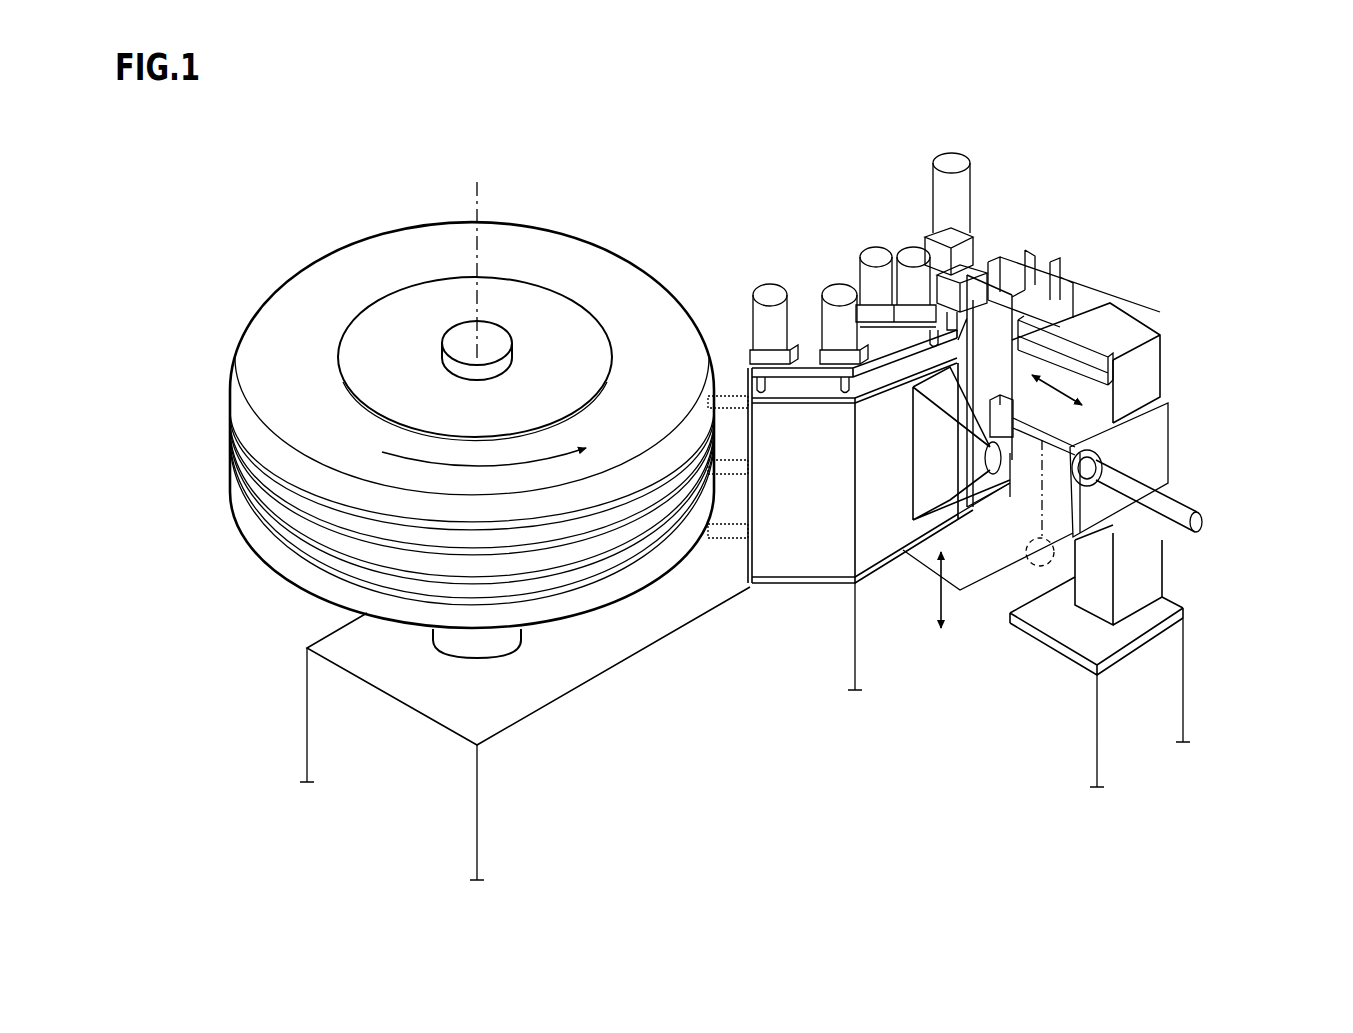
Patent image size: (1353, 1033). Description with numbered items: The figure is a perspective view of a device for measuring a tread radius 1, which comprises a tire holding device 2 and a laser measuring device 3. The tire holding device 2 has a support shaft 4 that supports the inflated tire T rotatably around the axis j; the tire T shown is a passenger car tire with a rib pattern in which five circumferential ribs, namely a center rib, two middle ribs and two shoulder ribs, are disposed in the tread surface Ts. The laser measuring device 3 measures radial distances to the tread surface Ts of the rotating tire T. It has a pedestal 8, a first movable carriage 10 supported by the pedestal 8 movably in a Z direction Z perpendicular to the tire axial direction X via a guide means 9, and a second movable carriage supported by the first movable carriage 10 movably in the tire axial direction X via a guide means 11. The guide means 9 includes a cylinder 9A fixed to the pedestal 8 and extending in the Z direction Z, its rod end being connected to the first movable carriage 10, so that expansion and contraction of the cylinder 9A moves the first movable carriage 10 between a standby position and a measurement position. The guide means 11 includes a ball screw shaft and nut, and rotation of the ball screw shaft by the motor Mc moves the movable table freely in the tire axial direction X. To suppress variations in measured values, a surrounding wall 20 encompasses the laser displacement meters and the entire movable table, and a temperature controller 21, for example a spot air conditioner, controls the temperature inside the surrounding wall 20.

The device for measuring a tread radius 1 is at (815, 213).
The tire holding device 2 is at (343, 731).
The laser measuring device 3 is at (1145, 255).
The support shaft 4 is at (512, 332).
The pedestal 8 is at (1143, 572).
The guide means 9 is at (1083, 365).
The cylinder 9A is at (1180, 512).
The first movable carriage 10 is at (990, 340).
The guide means 11 is at (950, 320).
The surrounding wall 20 is at (795, 547).
The temperature controller 21 is at (1030, 565).
The motor Mc is at (940, 193).
The tire T is at (358, 276).
The tread surface Ts is at (248, 408).
The axis j is at (478, 200).
The Z direction Z is at (1057, 395).
The tire axial direction X is at (940, 585).